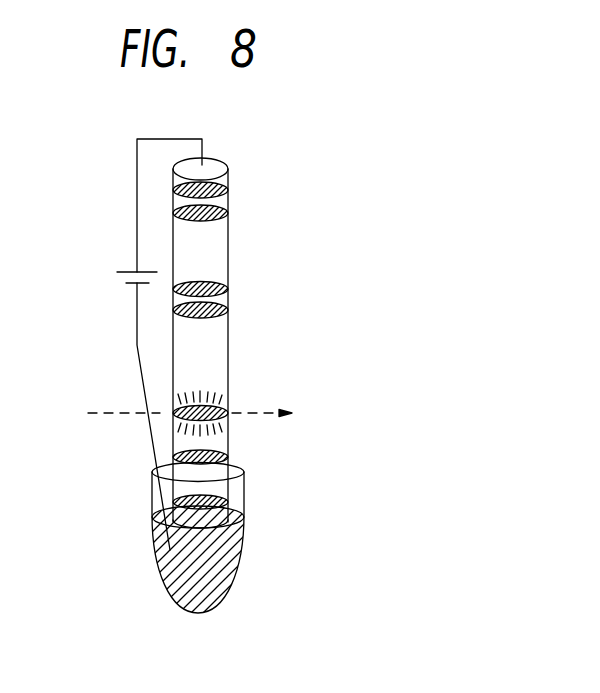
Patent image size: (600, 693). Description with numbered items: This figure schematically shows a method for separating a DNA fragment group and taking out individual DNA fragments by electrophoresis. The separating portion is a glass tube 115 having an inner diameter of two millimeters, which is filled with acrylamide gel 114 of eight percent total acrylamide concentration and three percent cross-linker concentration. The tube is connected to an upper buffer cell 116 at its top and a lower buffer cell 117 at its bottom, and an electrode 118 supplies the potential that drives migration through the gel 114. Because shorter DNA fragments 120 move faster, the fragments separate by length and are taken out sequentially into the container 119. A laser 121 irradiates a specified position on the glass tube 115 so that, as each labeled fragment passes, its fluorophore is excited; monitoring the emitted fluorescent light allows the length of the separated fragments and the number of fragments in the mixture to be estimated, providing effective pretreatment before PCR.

The gel 114 is at (222, 250).
The glass tube 115 is at (232, 174).
The upper buffer cell 116 is at (230, 198).
The lower buffer cell 117 is at (220, 496).
The electrode 118 is at (137, 222).
The container 119 is at (215, 573).
The shorter DNA fragments 120 is at (232, 297).
The laser 121 is at (104, 412).